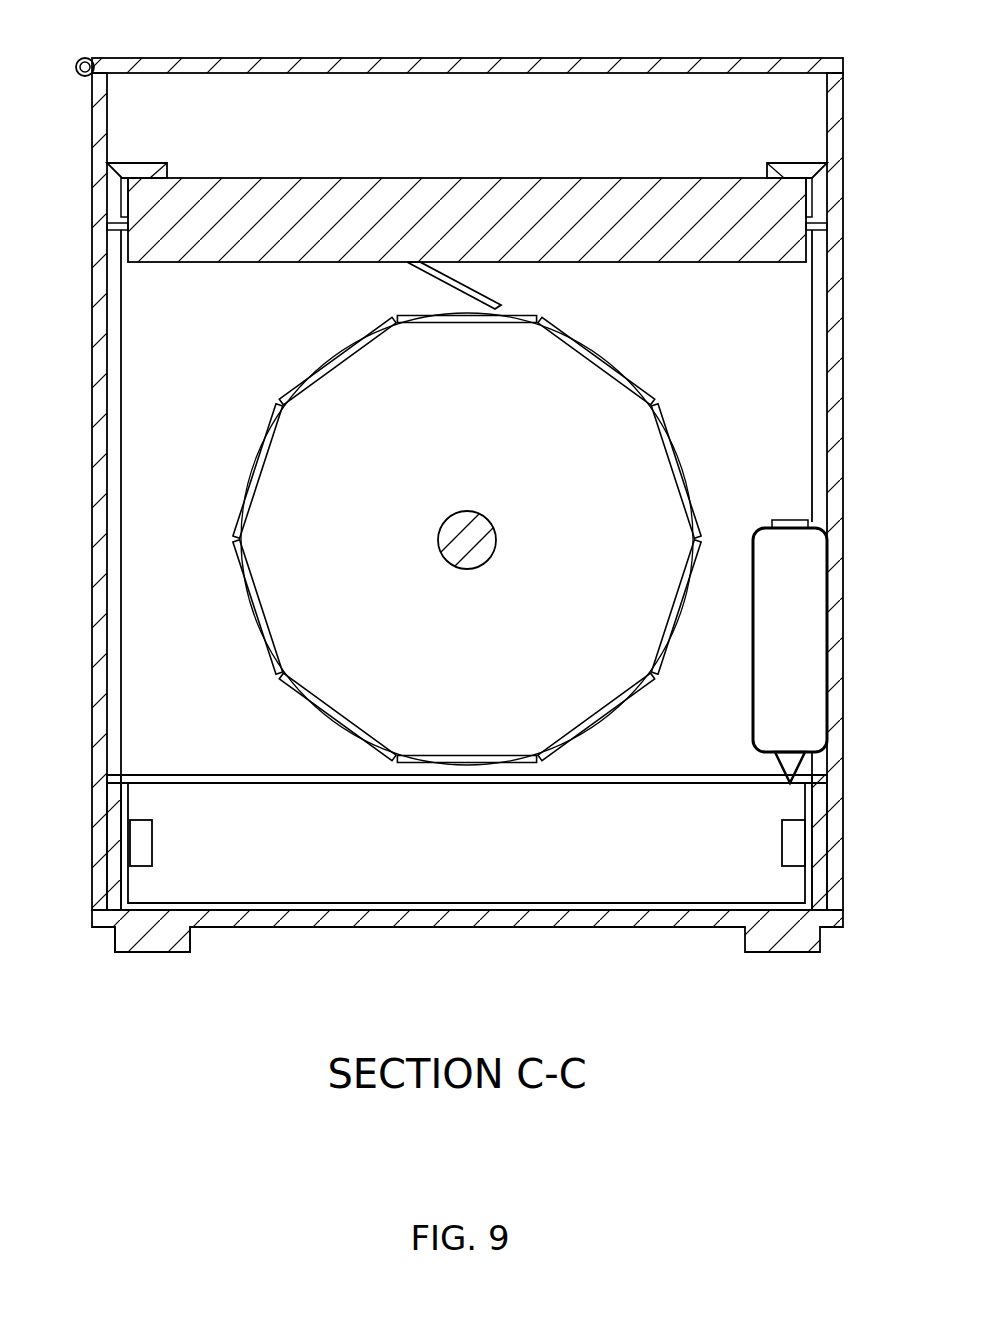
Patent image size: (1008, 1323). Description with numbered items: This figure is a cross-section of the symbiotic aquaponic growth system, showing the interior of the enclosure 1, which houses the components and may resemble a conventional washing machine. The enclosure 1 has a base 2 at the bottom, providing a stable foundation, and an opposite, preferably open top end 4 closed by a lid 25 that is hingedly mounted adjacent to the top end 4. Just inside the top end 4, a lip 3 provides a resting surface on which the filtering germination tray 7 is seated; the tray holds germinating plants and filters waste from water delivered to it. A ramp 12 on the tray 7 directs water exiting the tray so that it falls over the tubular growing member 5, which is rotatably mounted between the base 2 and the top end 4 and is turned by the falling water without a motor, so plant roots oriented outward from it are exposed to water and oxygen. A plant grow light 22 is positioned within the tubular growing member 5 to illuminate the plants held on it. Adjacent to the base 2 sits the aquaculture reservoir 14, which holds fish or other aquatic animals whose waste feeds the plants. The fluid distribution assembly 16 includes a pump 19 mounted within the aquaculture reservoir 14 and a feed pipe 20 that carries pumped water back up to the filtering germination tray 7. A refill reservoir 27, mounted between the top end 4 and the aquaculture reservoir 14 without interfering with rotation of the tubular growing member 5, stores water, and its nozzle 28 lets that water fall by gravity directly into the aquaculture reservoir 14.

The enclosure 1 is at (76, 419).
The base 2 is at (98, 928).
The lip 3 is at (815, 228).
The top end 4 is at (842, 66).
The tubular growing member 5 is at (276, 654).
The filtering germination tray 7 is at (416, 168).
The ramp 12 is at (445, 280).
The aquaculture reservoir 14 is at (402, 912).
The fluid distribution assembly 16 is at (134, 568).
The pump 19 is at (143, 840).
The feed pipe 20 is at (111, 382).
The plant grow light 22 is at (467, 518).
The lid 25 is at (216, 67).
The refill reservoir 27 is at (744, 631).
The nozzle 28 is at (787, 765).